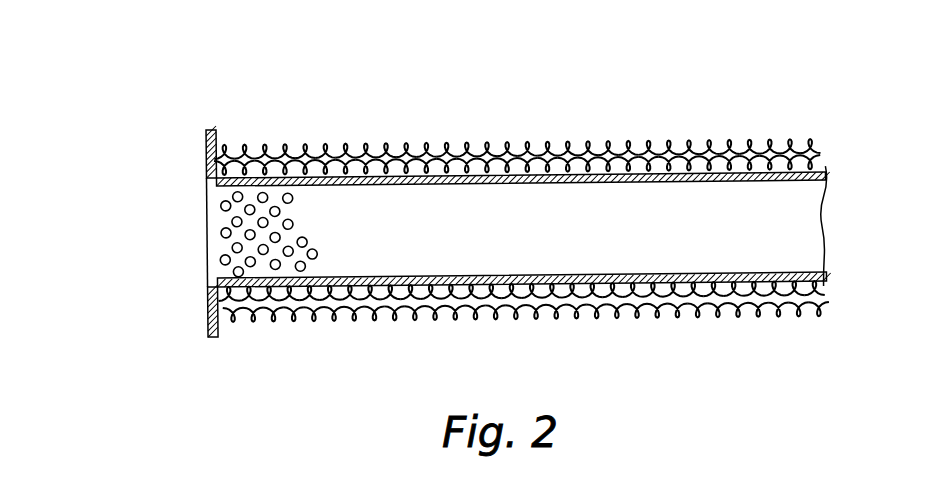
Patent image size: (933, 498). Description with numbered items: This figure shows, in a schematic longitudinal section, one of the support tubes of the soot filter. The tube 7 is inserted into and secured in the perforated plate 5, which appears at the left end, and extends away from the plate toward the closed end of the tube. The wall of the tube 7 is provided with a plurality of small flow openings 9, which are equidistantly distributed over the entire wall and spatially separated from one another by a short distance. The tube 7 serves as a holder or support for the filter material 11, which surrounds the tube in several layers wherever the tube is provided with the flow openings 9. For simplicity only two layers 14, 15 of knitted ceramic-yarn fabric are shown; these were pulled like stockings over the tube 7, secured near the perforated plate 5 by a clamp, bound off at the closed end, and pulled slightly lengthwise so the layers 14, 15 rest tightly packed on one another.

The perforated plate 5 is at (207, 327).
The tube 7 is at (833, 192).
The flow openings 9 is at (220, 262).
The filter material 11 is at (470, 146).
The layer 14 is at (730, 160).
The layer 15 is at (683, 147).